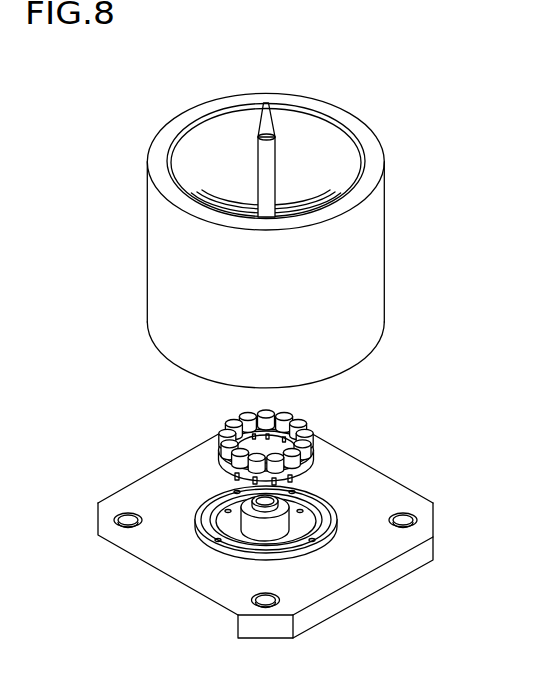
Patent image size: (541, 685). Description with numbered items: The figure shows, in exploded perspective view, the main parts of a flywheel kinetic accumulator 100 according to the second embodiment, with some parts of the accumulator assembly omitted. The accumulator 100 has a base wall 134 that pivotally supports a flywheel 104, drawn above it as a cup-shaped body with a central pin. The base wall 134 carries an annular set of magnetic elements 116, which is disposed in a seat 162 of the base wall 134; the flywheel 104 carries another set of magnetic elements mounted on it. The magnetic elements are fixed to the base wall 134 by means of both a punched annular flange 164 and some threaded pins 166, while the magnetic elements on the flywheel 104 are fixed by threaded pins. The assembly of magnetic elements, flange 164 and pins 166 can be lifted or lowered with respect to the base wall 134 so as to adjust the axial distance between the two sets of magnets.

The flywheel kinetic accumulator 100 is at (110, 115).
The flywheel 104 is at (285, 313).
The magnetic elements 116 is at (231, 443).
The base wall 134 is at (172, 548).
The seat 162 is at (220, 475).
The punched annular flange 164 is at (312, 450).
The threaded pins 166 is at (280, 489).